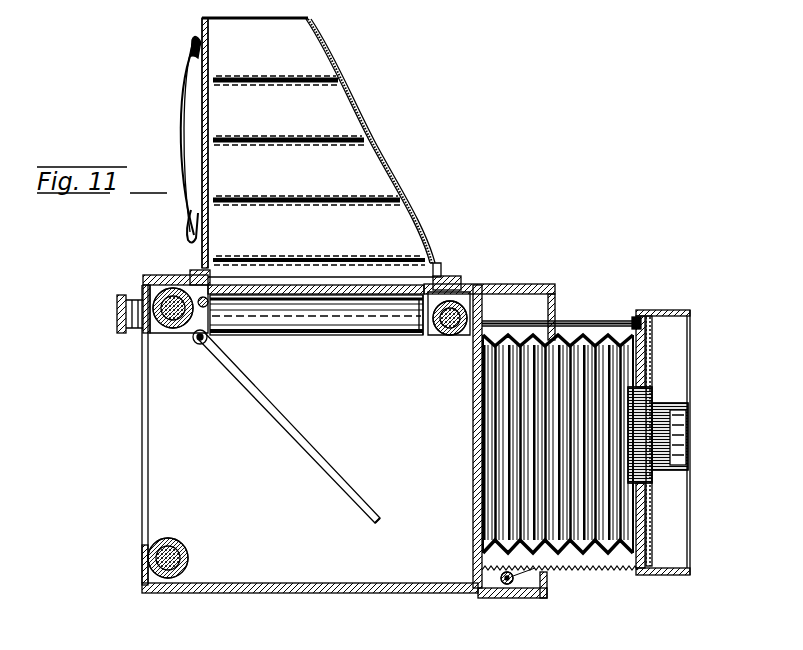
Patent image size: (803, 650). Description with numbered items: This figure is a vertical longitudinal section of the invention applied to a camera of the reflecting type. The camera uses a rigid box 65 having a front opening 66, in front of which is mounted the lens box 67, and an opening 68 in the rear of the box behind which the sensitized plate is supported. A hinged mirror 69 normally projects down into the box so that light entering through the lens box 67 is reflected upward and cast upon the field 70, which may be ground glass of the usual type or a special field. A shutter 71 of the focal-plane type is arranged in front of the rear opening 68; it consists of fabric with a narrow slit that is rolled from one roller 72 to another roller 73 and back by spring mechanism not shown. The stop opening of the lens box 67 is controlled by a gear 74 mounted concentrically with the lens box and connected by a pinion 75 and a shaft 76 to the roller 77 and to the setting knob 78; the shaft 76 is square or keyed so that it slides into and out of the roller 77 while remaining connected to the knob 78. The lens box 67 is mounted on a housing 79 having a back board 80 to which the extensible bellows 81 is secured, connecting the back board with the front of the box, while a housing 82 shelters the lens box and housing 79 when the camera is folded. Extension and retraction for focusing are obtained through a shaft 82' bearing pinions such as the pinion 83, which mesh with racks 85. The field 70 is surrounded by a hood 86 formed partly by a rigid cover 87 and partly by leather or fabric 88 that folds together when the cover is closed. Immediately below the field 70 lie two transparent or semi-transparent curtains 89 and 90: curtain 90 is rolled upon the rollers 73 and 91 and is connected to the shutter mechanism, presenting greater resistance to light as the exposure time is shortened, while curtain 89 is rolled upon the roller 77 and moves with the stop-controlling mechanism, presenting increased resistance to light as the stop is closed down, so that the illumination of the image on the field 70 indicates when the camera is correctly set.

The rigid box 65 is at (291, 567).
The front opening 66 is at (478, 365).
The lens box 67 is at (675, 410).
The opening 68 is at (143, 520).
The hinged mirror 69 is at (358, 503).
The field 70 is at (316, 290).
The shutter 71 is at (150, 401).
The roller 72 is at (150, 589).
The roller 73 is at (170, 290).
The gear 74 is at (651, 500).
The pinion 75 is at (655, 327).
The shaft 76 is at (603, 322).
The roller 77 is at (420, 336).
The setting knob 78 is at (117, 325).
The housing 79 is at (675, 532).
The back board 80 is at (641, 572).
The extensible bellows 81 is at (568, 340).
The housing 82 is at (497, 286).
The shaft 82' is at (509, 601).
The pinion 83 is at (549, 592).
The racks 85 is at (612, 562).
The hood 86 is at (381, 143).
The rigid cover 87 is at (188, 42).
The leather or fabric 88 is at (336, 72).
The curtain 89 is at (356, 311).
The curtain 90 is at (447, 303).
The roller 91 is at (471, 304).